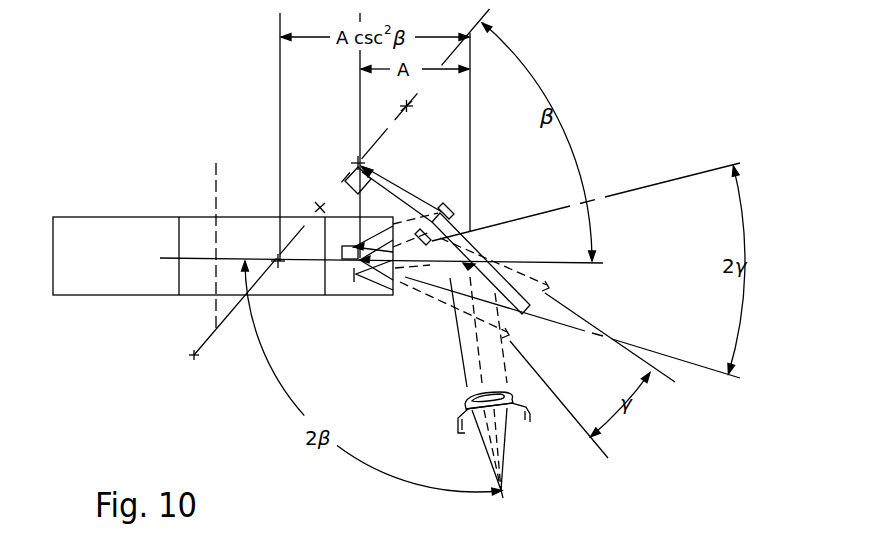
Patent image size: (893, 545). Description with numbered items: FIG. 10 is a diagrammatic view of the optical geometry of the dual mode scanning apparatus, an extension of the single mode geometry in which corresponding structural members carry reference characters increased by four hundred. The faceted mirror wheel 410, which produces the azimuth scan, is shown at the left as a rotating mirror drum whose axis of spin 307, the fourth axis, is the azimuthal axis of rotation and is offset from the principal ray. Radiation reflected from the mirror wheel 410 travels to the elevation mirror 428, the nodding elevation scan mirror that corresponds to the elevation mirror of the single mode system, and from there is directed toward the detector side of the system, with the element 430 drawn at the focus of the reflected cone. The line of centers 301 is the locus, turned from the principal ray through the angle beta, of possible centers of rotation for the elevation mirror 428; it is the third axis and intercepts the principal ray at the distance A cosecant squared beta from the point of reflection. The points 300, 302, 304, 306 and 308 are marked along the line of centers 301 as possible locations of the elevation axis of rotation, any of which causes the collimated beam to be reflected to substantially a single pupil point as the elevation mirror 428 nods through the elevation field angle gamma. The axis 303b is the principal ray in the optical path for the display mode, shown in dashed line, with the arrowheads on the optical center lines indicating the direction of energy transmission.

The point on line of centers 300 is at (357, 159).
The line of centers 301 is at (434, 78).
The point on line of centers 302 is at (408, 114).
The display mode axis 303b is at (424, 267).
The point on line of centers 304 is at (318, 206).
The point on line of centers 306 is at (279, 262).
The axis of spin 307 is at (216, 198).
The point on line of centers 308 is at (196, 369).
The faceted mirror wheel 410 is at (128, 217).
The elevation mirror 428 is at (536, 320).
The detector lens assembly 430 is at (467, 401).